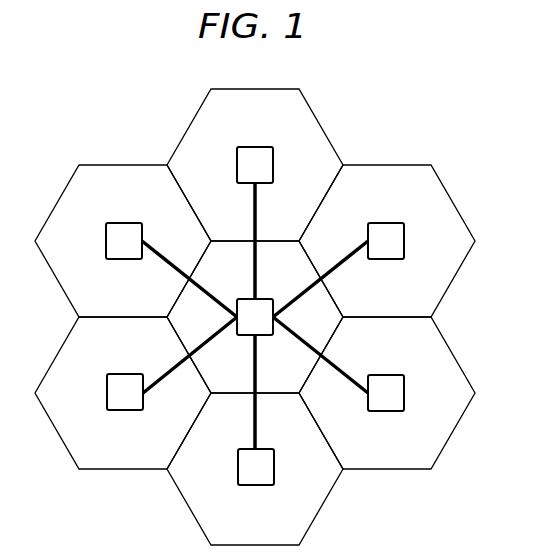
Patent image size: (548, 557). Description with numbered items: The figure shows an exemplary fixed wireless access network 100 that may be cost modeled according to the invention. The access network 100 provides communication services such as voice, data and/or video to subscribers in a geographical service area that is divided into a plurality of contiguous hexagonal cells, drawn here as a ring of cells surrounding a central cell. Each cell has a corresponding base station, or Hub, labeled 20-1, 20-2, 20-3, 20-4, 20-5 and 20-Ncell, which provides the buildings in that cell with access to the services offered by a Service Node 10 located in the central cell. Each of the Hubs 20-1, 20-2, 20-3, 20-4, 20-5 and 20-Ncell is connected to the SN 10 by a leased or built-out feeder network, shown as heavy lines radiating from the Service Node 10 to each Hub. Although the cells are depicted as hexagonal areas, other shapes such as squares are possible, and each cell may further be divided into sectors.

The fixed wireless access network 100 is at (440, 88).
The Service Node (SN) 10 is at (268, 299).
The base station (Hub) 20-1 is at (250, 147).
The base station (Hub) 20-2 is at (386, 223).
The base station (Hub) 20-3 is at (388, 375).
The base station (Hub) 20-4 is at (257, 486).
The base station (Hub) 20-5 is at (125, 374).
The base station (Hub) 20-Ncell is at (124, 223).